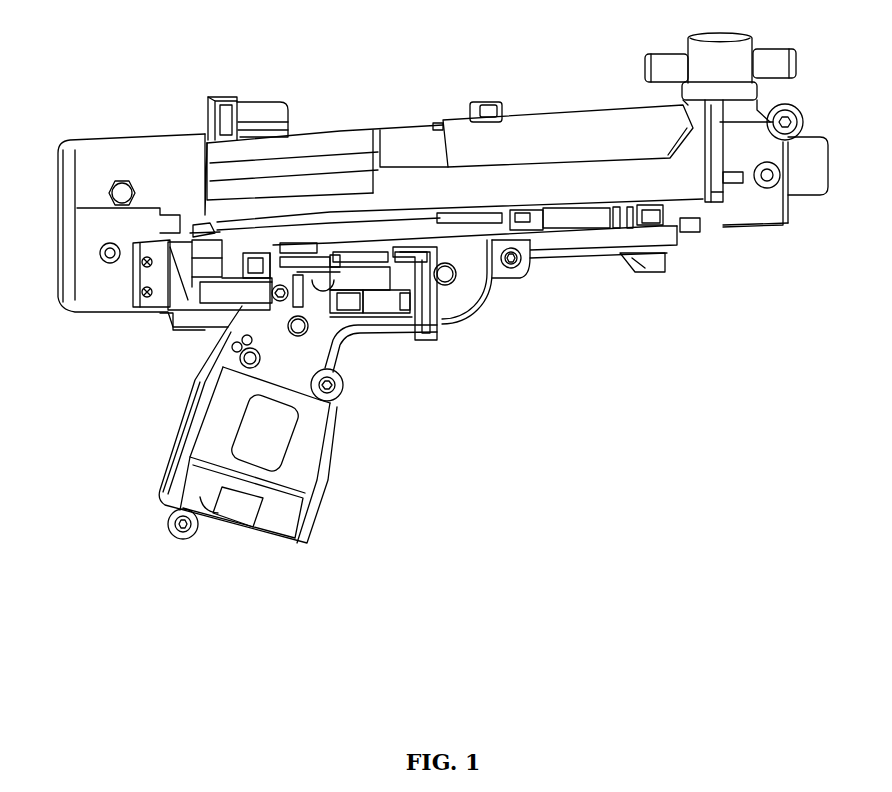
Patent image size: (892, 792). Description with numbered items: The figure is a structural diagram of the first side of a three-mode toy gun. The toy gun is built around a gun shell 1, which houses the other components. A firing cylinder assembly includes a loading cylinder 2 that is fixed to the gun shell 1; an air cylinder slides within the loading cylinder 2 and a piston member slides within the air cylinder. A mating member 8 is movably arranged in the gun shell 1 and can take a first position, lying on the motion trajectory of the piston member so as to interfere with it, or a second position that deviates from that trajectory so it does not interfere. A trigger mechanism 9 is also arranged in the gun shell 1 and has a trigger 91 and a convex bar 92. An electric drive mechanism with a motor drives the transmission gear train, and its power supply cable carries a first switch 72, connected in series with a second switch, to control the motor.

The gun shell 1 is at (191, 158).
The loading cylinder 2 is at (733, 108).
The mating member 8 is at (203, 250).
The trigger mechanism 9 is at (333, 60).
The trigger 91 is at (415, 275).
The convex bar 92 is at (238, 293).
The first switch 72 is at (150, 278).